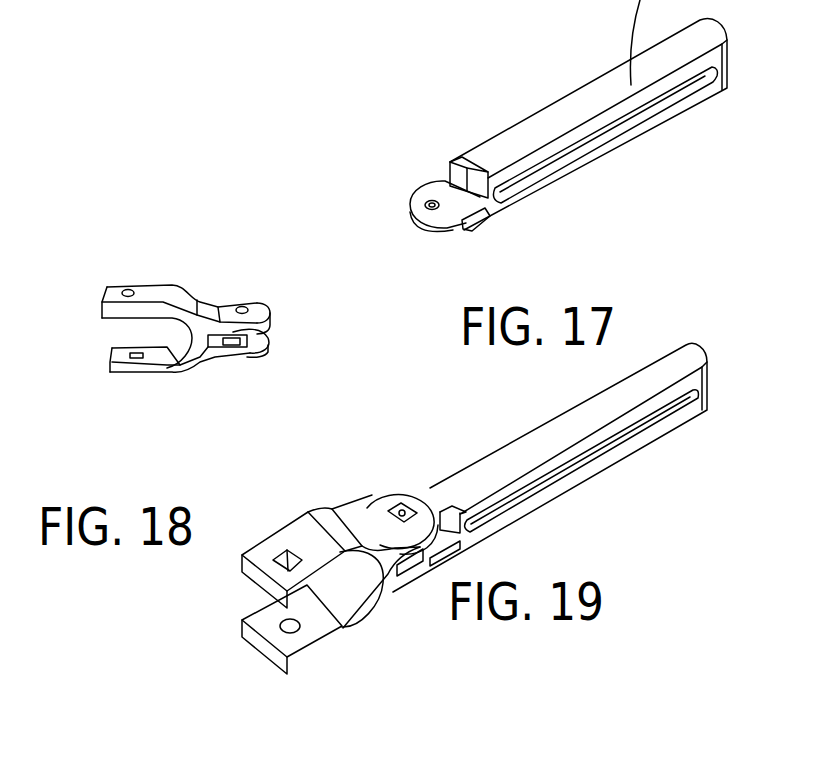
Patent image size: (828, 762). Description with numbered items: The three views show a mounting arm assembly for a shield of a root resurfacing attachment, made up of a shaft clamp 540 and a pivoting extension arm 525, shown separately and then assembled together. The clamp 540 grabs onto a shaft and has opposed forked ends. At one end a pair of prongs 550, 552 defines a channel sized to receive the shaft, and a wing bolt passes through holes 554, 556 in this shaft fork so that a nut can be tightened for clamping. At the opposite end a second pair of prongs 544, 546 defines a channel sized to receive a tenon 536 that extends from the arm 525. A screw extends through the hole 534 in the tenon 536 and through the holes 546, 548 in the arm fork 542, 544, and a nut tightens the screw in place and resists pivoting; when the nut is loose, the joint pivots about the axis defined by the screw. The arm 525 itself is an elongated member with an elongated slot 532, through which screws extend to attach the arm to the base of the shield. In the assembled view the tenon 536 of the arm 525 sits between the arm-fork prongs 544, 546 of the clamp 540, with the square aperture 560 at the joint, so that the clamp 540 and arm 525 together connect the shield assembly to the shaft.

In FIG. 17, the pivoting extension arm 525 is at (677, 120).
In FIG. 19, the pivoting extension arm 525 is at (587, 480).
In FIG. 17, the slot 532 is at (547, 167).
In FIG. 17, the hole 534 is at (428, 198).
In FIG. 17, the tenon 536 is at (430, 232).
In FIG. 18, the clamp 540 is at (278, 327).
In FIG. 19, the clamp 540 is at (350, 642).
In FIG. 18, the arm fork 542 is at (257, 298).
In FIG. 18, the prong 544 is at (263, 355).
In FIG. 18, the prong 546 is at (238, 312).
In FIG. 18, the hole 548 is at (242, 355).
In FIG. 18, the prong 550 is at (152, 298).
In FIG. 18, the prong 552 is at (173, 383).
In FIG. 18, the hole 554 is at (130, 288).
In FIG. 18, the hole 556 is at (107, 372).
In FIG. 19, the square aperture 560 is at (403, 505).